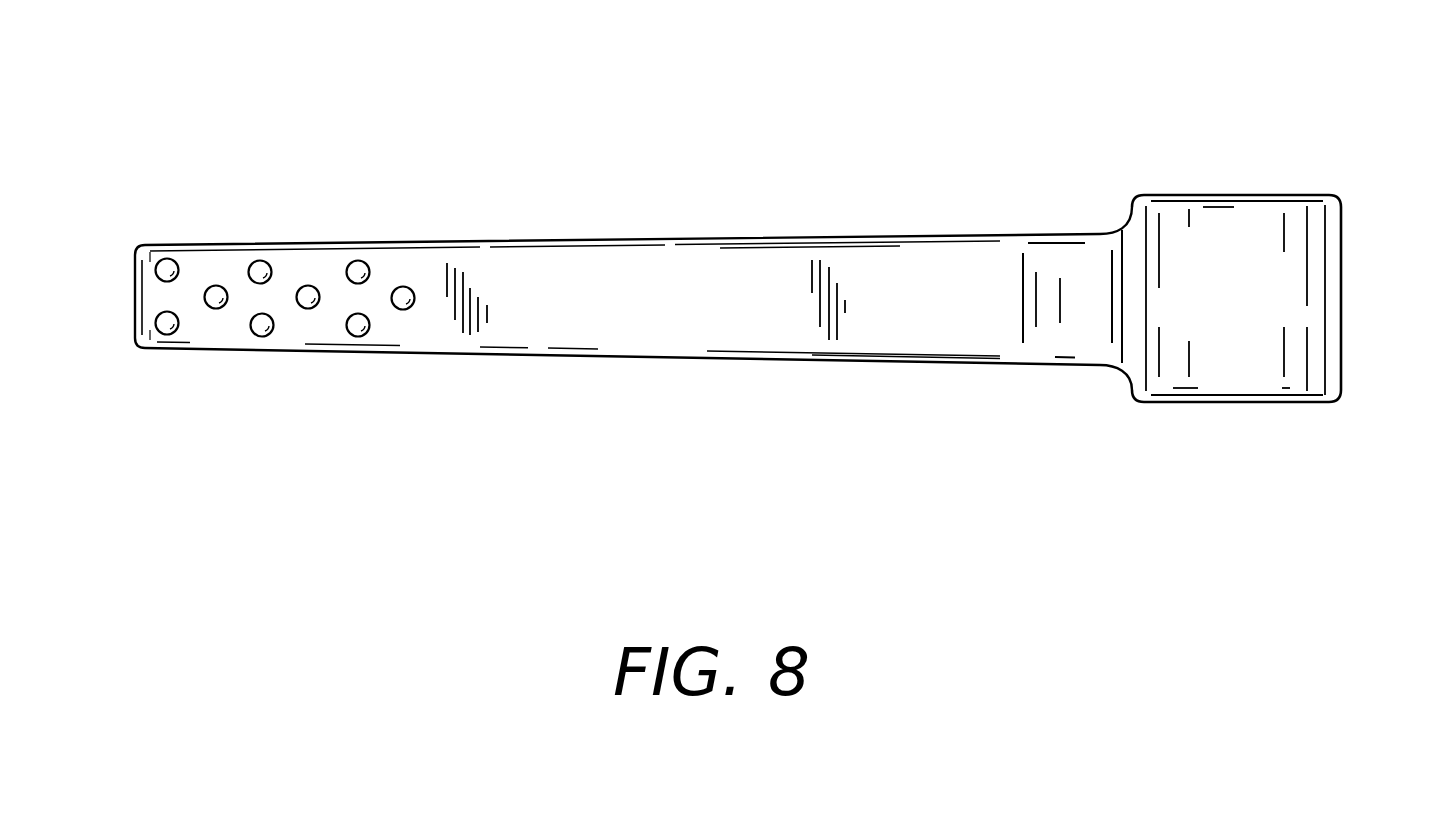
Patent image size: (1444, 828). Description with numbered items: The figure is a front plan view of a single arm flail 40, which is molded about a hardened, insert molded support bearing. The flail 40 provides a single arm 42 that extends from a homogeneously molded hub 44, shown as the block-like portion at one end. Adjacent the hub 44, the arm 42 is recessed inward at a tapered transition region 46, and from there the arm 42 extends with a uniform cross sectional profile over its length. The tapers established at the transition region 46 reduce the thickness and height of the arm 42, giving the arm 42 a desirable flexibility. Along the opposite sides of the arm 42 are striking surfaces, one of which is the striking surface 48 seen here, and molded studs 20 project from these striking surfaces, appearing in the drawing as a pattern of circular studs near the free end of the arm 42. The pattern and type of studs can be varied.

The molded studs 20 is at (254, 263).
The single arm flail 40 is at (968, 125).
The arm 42 is at (638, 333).
The hub 44 is at (1334, 288).
The tapered transition region 46 is at (1023, 288).
The striking surface 48 is at (197, 336).